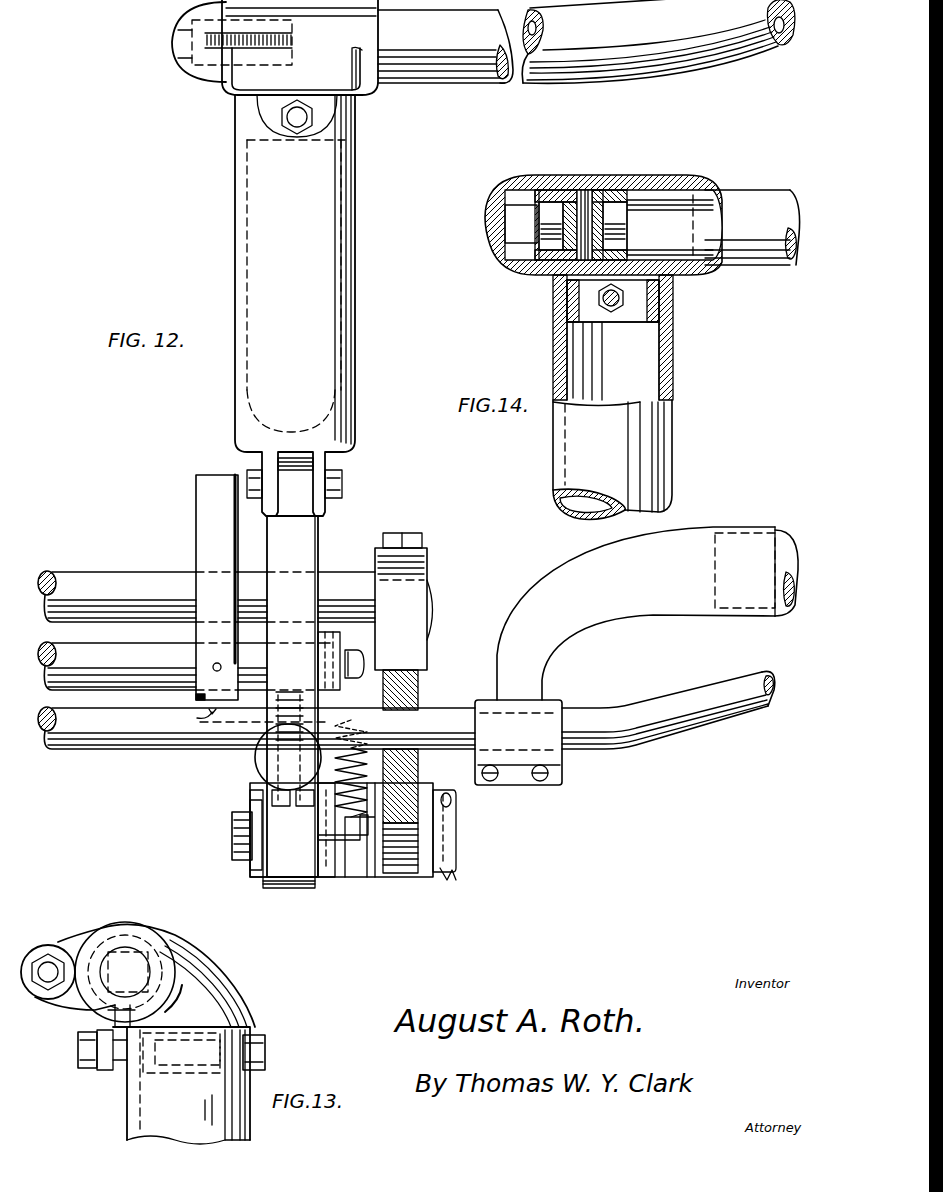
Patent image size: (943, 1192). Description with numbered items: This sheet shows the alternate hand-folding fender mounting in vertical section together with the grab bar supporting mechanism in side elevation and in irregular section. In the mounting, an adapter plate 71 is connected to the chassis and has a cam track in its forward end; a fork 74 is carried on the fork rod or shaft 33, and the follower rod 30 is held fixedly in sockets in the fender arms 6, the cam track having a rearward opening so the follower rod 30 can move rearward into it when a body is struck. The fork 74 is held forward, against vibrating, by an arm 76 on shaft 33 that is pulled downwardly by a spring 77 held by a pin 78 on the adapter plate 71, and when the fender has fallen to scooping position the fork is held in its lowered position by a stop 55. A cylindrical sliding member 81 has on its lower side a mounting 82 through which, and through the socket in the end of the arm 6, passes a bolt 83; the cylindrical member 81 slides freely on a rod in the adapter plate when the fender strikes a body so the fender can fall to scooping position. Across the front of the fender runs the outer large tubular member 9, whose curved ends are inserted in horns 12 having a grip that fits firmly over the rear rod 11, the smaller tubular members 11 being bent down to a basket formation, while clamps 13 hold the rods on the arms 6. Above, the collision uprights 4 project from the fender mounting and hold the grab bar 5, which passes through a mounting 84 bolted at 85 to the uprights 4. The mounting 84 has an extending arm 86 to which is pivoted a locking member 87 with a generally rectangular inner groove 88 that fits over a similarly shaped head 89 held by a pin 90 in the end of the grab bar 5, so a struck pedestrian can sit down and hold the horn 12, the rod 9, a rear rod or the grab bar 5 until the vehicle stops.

In FIG. 12, the collision uprights 4 is at (258, 226).
In FIG. 14, the collision uprights 4 is at (665, 467).
In FIG. 13, the collision uprights 4 is at (130, 1100).
In FIG. 12, the grab bar 5 is at (452, 84).
In FIG. 14, the grab bar 5 is at (750, 198).
In FIG. 12, the arms 6 is at (433, 769).
In FIG. 12, the outer large tubular member 9 is at (792, 535).
In FIG. 12, the smaller tubular members 11 is at (131, 745).
In FIG. 12, the horns 12 is at (686, 610).
In FIG. 12, the clamps 13 is at (417, 680).
In FIG. 12, the follower rod 30 is at (143, 580).
In FIG. 12, the fork rod or shaft 33 is at (135, 657).
In FIG. 12, the stop 55 is at (249, 718).
In FIG. 12, the adapter plate 71 is at (305, 545).
In FIG. 12, the fork 74 is at (212, 534).
In FIG. 12, the arm 76 is at (345, 652).
In FIG. 12, the spring 77 is at (358, 818).
In FIG. 12, the pin 78 is at (340, 848).
In FIG. 12, the cylindrical sliding member 81 is at (255, 749).
In FIG. 12, the mounting 82 is at (254, 873).
In FIG. 12, the bolt 83 is at (230, 821).
In FIG. 14, the mounting 84 is at (680, 175).
In FIG. 14, the bolt 85 is at (625, 303).
In FIG. 13, the extending arm 86 is at (52, 945).
In FIG. 14, the locking member 87 is at (518, 262).
In FIG. 13, the locking member 87 is at (140, 937).
In FIG. 14, the inner groove 88 is at (523, 262).
In FIG. 13, the inner groove 88 is at (172, 970).
In FIG. 14, the head 89 is at (508, 222).
In FIG. 13, the head 89 is at (128, 972).
In FIG. 14, the pin 90 is at (584, 190).